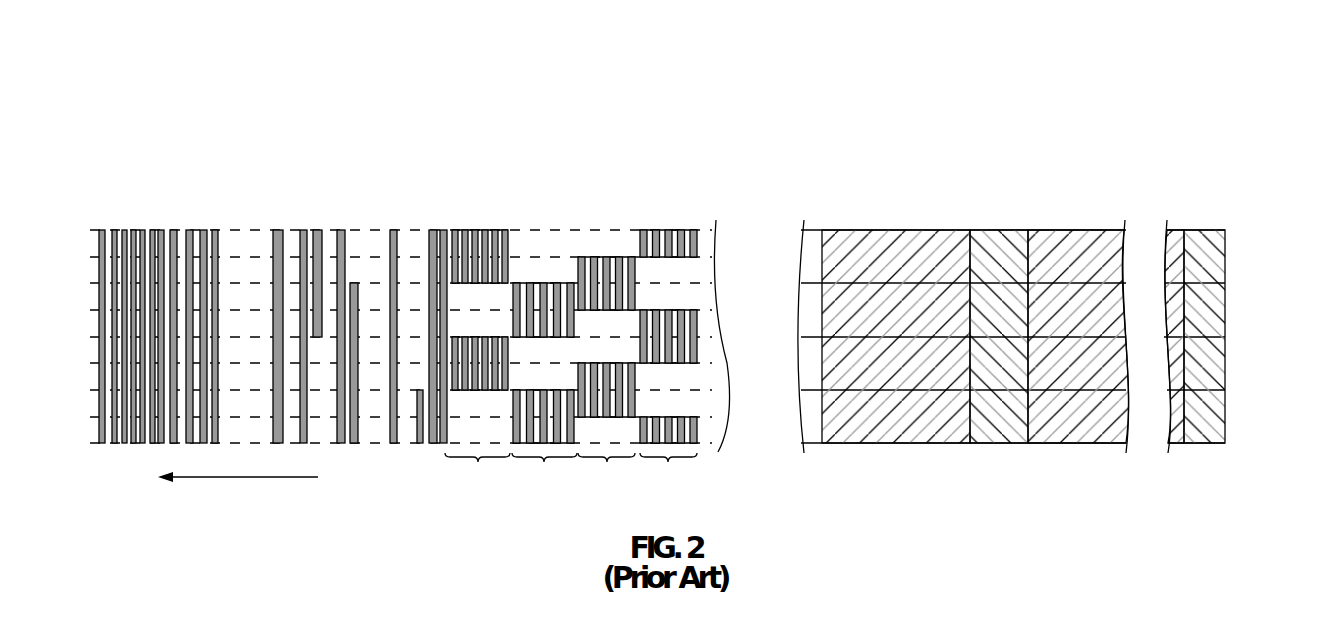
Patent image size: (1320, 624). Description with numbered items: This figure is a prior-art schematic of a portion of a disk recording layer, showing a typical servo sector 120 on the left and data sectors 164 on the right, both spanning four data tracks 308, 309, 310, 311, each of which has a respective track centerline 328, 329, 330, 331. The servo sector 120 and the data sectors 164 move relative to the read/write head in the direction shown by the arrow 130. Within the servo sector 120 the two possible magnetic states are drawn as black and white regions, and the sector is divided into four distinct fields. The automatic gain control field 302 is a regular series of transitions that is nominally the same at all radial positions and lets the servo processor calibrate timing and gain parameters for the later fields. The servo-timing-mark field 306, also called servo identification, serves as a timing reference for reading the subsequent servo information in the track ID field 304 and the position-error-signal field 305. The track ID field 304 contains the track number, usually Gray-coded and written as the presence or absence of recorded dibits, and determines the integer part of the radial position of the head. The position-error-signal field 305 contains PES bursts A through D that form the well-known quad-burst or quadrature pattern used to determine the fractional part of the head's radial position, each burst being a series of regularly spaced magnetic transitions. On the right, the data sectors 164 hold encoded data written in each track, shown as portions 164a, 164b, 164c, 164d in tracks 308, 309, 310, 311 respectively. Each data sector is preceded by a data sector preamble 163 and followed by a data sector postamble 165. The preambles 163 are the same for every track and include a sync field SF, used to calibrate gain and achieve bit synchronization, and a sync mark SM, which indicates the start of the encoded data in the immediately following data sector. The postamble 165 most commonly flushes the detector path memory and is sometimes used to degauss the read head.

The servo sector 120 is at (695, 147).
The automatic gain control (AGC) field 302 is at (97, 216).
The servo-timing-mark (STM) field 306 is at (223, 216).
The track ID (TID) field 304 is at (443, 216).
The position-error-signal (PES) field 305 is at (571, 322).
The data track 308 is at (88, 230).
The data track 309 is at (88, 283).
The data track 310 is at (88, 337).
The data track 311 is at (88, 390).
The track centerline 328 is at (512, 259).
The track centerline 329 is at (448, 312).
The track centerline 330 is at (512, 366).
The track centerline 331 is at (448, 419).
The arrow 130 is at (248, 479).
The data sector preamble 163 is at (818, 217).
The data sectors 164 is at (1100, 301).
The data sector encoded data 164a is at (1085, 258).
The data sector encoded data 164b is at (1085, 311).
The data sector encoded data 164c is at (1085, 364).
The data sector encoded data 164d is at (1085, 418).
The data sector postamble 165 is at (1187, 217).